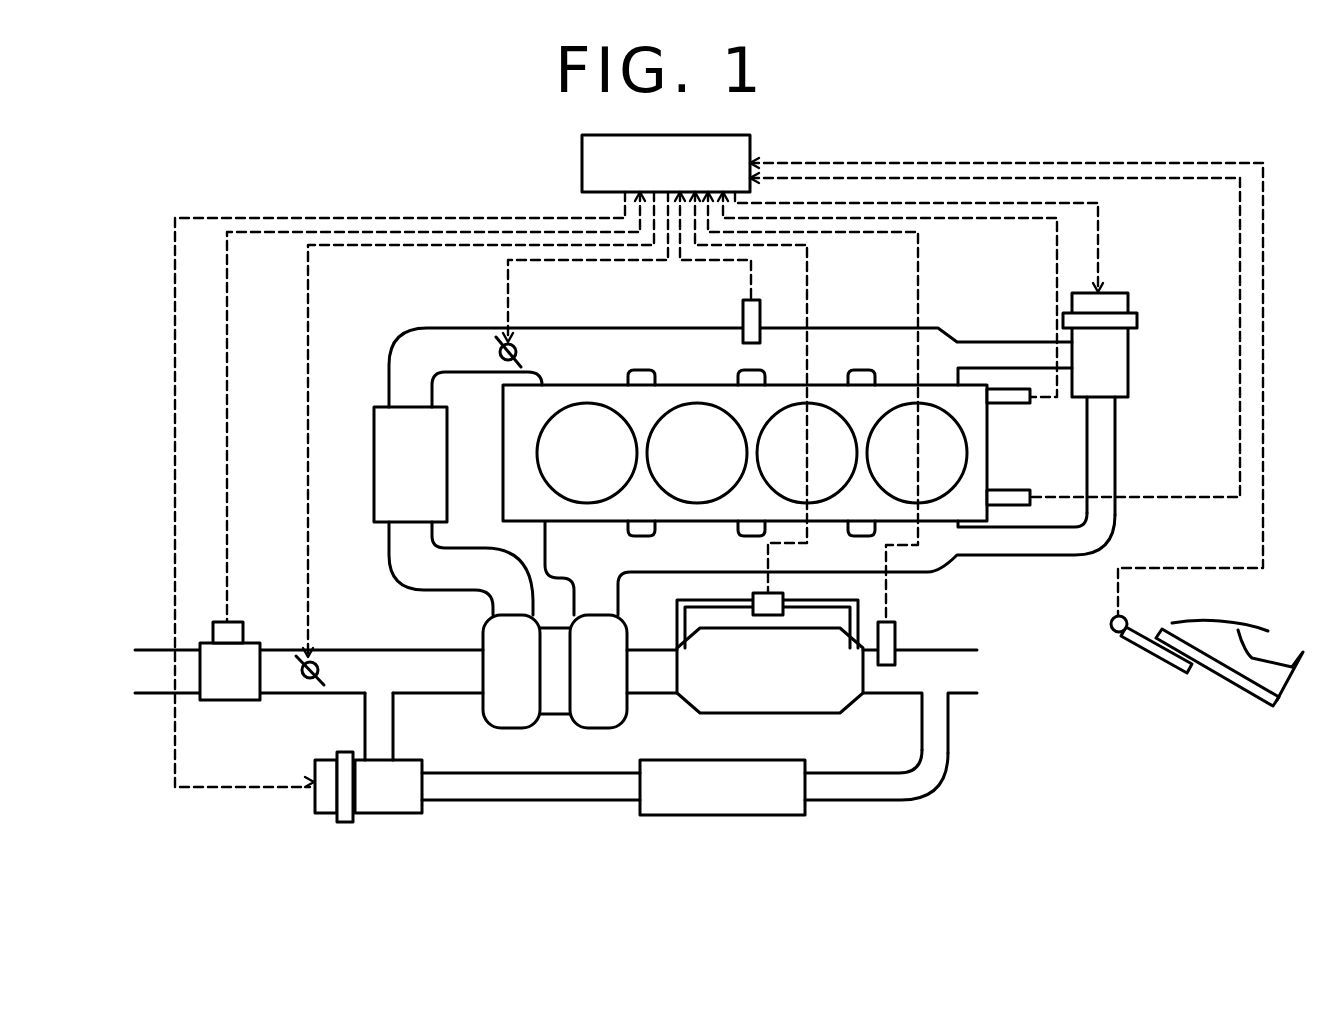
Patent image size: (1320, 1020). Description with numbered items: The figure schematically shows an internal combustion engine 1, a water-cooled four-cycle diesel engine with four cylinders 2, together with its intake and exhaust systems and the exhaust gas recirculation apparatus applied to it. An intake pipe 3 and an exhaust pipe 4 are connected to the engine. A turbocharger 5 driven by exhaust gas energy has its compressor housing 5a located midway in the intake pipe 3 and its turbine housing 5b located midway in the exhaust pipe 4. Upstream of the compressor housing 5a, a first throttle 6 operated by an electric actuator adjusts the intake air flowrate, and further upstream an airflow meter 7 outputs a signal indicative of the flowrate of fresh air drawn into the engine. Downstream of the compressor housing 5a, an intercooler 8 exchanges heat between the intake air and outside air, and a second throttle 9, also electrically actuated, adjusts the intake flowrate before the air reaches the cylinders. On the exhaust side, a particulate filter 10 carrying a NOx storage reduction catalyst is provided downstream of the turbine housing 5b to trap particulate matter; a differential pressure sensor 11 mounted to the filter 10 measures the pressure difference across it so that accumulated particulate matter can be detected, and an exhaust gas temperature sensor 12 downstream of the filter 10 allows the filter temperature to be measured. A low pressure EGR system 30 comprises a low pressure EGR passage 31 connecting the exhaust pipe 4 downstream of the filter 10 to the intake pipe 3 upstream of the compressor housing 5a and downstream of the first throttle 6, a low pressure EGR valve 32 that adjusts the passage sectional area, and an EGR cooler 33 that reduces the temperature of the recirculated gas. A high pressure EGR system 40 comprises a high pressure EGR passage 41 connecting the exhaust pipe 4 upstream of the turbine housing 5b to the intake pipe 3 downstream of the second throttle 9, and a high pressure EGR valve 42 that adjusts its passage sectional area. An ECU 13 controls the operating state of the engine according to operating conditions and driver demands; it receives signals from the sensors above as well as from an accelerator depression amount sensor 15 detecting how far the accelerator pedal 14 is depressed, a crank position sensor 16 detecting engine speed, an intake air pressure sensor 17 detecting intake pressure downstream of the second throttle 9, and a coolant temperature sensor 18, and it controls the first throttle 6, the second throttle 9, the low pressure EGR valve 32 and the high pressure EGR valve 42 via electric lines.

The internal combustion engine 1 is at (1040, 638).
The cylinders 2 is at (594, 404).
The intake pipe 3 is at (543, 328).
The exhaust pipe 4 is at (900, 576).
The turbocharger 5 is at (496, 733).
The compressor housing 5a is at (507, 728).
The turbine housing 5b is at (593, 728).
The first throttle 6 is at (307, 678).
The airflow meter 7 is at (243, 630).
The intercooler 8 is at (374, 458).
The second throttle 9 is at (505, 357).
The particulate filter 10 is at (770, 713).
The differential pressure sensor 11 is at (755, 594).
The exhaust gas temperature sensor 12 is at (897, 632).
The ECU 13 is at (582, 162).
The accelerator pedal 14 is at (1212, 672).
The accelerator depression amount sensor 15 is at (1128, 620).
The crank position sensor 16 is at (1012, 405).
The intake air pressure sensor 17 is at (743, 320).
The coolant temperature sensor 18 is at (1010, 490).
The low pressure EGR system 30 is at (576, 784).
The low pressure EGR passage 31 is at (847, 802).
The low pressure EGR valve 32 is at (368, 815).
The EGR cooler 33 is at (722, 815).
The high pressure EGR system 40 is at (1140, 386).
The high pressure EGR passage 41 is at (1116, 410).
The high pressure EGR valve 42 is at (1128, 345).